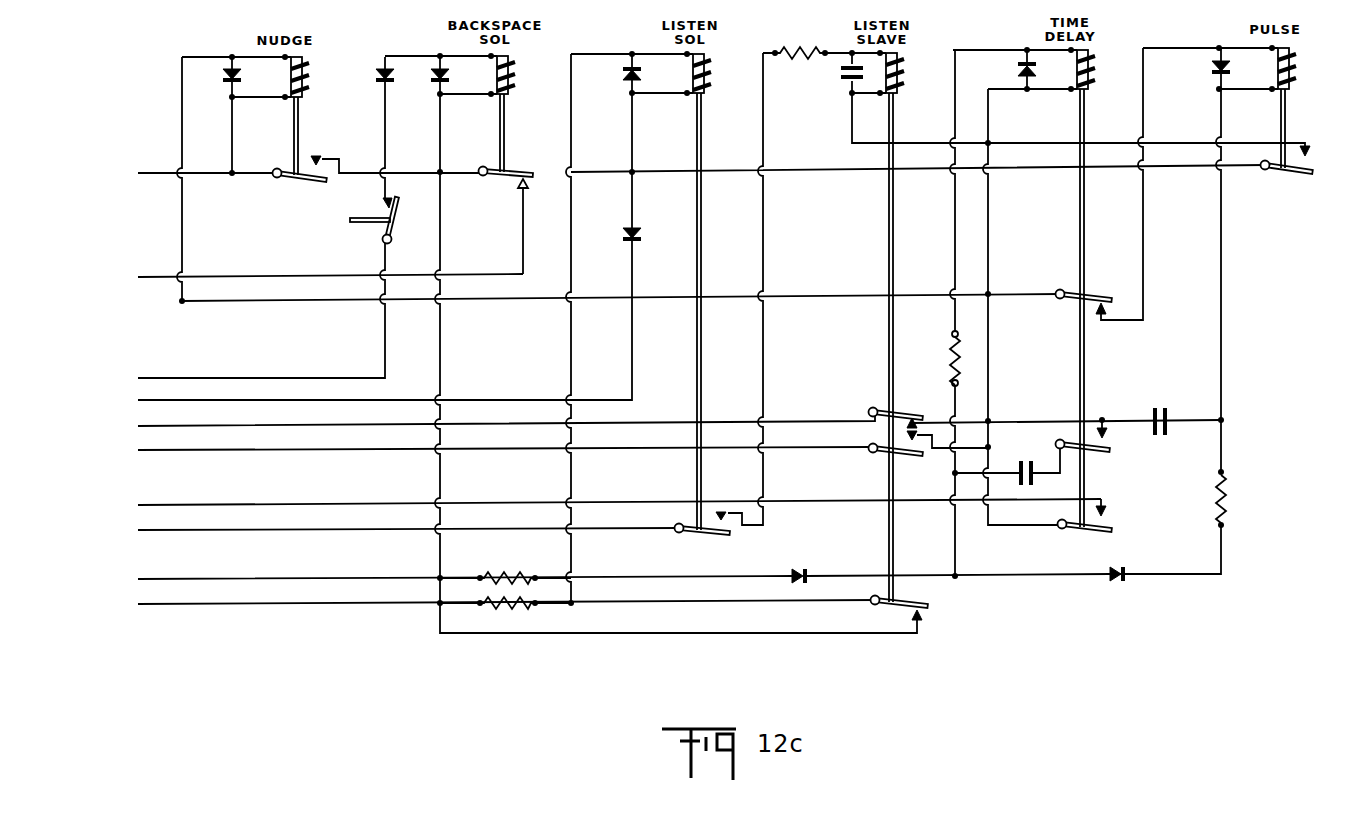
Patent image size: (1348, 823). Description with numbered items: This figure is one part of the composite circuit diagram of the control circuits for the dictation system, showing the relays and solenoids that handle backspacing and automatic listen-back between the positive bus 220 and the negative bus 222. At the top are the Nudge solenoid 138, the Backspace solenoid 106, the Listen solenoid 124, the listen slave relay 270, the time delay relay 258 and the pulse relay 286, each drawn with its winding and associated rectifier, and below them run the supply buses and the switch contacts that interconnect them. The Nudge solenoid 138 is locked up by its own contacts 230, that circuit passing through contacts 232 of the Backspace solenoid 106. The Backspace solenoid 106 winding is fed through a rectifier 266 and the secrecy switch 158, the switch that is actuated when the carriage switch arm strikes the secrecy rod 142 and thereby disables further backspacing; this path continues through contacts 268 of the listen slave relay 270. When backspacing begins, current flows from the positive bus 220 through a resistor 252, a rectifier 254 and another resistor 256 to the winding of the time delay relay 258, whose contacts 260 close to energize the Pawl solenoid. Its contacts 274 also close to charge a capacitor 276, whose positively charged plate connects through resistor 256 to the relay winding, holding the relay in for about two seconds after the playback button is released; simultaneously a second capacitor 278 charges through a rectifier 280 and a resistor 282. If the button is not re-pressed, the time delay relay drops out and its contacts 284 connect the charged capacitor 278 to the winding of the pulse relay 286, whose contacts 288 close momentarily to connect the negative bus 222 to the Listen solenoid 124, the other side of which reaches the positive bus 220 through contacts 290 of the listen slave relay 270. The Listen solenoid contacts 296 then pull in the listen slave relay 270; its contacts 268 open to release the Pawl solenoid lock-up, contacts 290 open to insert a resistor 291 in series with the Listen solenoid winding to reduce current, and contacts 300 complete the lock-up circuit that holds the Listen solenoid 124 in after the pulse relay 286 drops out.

The Nudge solenoid 138 is at (350, 66).
The Backspace solenoid 106 is at (553, 63).
The Listen solenoid 124 is at (748, 64).
The listen slave relay 270 is at (940, 60).
The time delay relay 258 is at (1128, 58).
The pulse relay 286 is at (1330, 58).
The rectifier 266 is at (394, 78).
The contacts 230 is at (311, 164).
The contacts 232 is at (526, 180).
The secrecy rod 142 is at (371, 216).
The secrecy switch 158 is at (392, 195).
The positive bus 220 is at (216, 277).
The negative bus 222 is at (216, 301).
The resistor 256 is at (951, 350).
The contacts 268 is at (930, 403).
The contacts 300 is at (927, 446).
The capacitor 276 is at (1024, 460).
The contacts 274 is at (1112, 440).
The second capacitor 278 is at (1162, 408).
The resistor 282 is at (1232, 492).
The contacts 284 is at (1113, 298).
The contacts 260 is at (1110, 521).
The rectifier 280 is at (1121, 582).
The contacts 288 is at (1318, 166).
The resistor 252 is at (500, 575).
The resistor 291 is at (505, 606).
The contacts 296 is at (739, 525).
The rectifier 254 is at (807, 569).
The contacts 290 is at (927, 612).